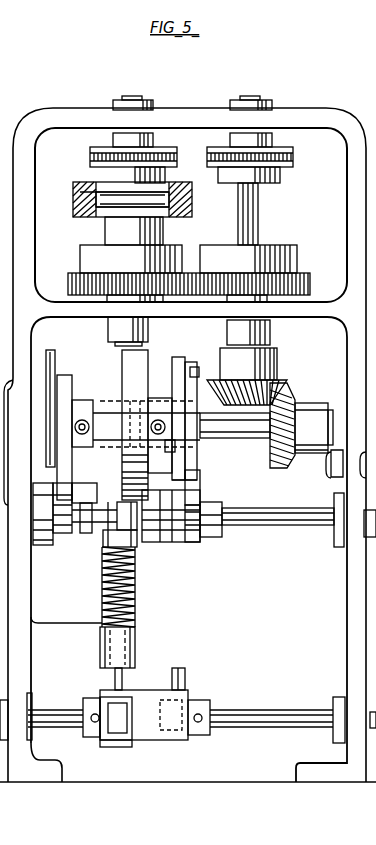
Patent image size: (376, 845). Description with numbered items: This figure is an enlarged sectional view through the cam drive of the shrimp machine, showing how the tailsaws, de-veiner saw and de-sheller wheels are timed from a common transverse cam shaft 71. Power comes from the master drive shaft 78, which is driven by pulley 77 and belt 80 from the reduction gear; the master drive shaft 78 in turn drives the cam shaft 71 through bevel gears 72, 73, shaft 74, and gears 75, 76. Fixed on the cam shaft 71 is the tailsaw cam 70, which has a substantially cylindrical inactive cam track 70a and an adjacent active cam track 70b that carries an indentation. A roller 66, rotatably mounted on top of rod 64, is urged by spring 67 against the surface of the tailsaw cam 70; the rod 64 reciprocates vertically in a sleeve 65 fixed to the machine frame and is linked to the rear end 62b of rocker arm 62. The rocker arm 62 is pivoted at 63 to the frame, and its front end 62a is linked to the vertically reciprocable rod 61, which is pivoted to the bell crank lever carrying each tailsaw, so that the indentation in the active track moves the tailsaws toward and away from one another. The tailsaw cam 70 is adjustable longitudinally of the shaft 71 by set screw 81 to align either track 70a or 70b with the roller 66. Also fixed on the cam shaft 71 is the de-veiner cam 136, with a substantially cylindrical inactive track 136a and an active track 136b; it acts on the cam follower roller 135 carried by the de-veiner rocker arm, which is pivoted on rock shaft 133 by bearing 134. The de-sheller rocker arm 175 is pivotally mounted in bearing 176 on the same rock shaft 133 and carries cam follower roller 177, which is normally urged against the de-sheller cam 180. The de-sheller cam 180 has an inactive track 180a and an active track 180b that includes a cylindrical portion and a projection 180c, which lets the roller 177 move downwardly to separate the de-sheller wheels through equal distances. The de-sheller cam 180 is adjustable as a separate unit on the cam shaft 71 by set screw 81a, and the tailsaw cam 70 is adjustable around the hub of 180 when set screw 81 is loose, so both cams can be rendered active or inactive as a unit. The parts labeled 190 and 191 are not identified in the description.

The vertically reciprocable rod 61 is at (185, 678).
The rocker arm 62 is at (175, 752).
The front end of rocker arm 62a is at (182, 740).
The rear end of rocker arm 62b is at (112, 735).
The pivot 63 is at (265, 715).
The rod 64 is at (122, 680).
The sleeve 65 is at (135, 643).
The roller 66 is at (130, 532).
The spring 67 is at (135, 591).
The tailsaw cam 70 is at (122, 374).
The inactive cam track 70a is at (135, 400).
The active cam track 70b is at (122, 456).
The cam shaft 71 is at (255, 427).
The bevel gear 72 is at (302, 405).
The bevel gear 73 is at (272, 368).
The shaft 74 is at (252, 99).
The gear 75 is at (297, 273).
The gear 76 is at (80, 275).
The pulley 77 is at (80, 195).
The master drive shaft 78 is at (133, 99).
The belt 80 is at (73, 200).
The set screw 81 is at (158, 418).
The set screw 81a is at (197, 455).
The rock shaft 133 is at (280, 527).
The bearing 134 is at (100, 496).
The cam follower roller 135 is at (66, 552).
The de-veiner cam 136 is at (58, 503).
The inactive track 136a is at (52, 352).
The active track 136b is at (65, 378).
The de-sheller rocker arm 175 is at (200, 500).
The bearing 176 is at (200, 547).
The cam follower roller 177 is at (175, 532).
The de-sheller cam 180 is at (197, 478).
The inactive track 180a is at (199, 372).
The active track 180b is at (178, 360).
The projection 180c is at (190, 362).
The gear 190 is at (90, 153).
The shaft 191 is at (207, 160).